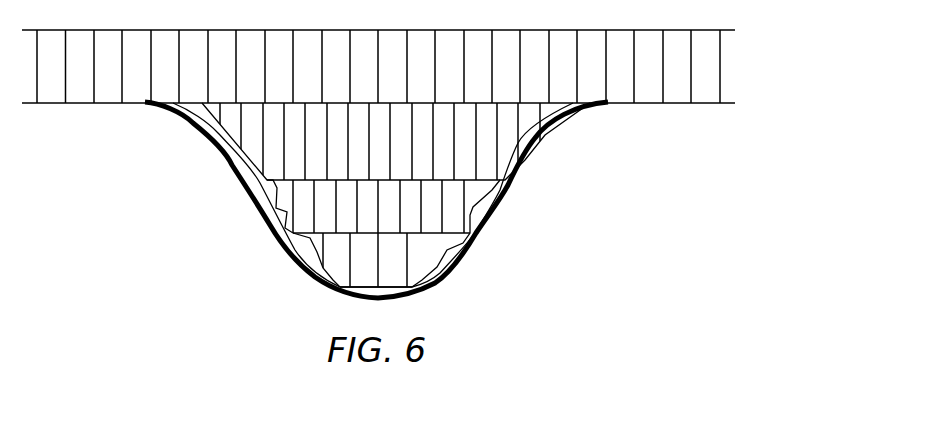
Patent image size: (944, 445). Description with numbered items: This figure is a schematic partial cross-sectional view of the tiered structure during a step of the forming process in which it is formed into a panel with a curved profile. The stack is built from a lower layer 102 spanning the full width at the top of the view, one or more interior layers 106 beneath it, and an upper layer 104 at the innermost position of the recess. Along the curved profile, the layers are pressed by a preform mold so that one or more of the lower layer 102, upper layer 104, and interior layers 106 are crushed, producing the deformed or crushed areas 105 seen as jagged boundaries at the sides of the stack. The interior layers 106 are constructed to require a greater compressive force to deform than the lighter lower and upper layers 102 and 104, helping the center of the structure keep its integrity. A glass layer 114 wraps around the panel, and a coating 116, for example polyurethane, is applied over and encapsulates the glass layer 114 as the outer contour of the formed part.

The lower layer 102 is at (700, 73).
The upper layer 104 is at (455, 272).
The deformed or crushed areas 105 is at (473, 222).
The interior layers 106 is at (517, 142).
The glass layer 114 is at (230, 163).
The coating 116 is at (250, 205).